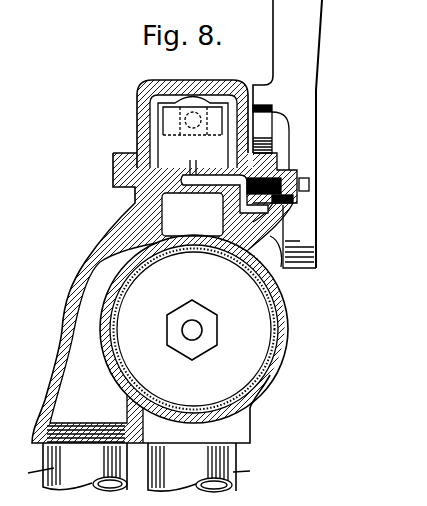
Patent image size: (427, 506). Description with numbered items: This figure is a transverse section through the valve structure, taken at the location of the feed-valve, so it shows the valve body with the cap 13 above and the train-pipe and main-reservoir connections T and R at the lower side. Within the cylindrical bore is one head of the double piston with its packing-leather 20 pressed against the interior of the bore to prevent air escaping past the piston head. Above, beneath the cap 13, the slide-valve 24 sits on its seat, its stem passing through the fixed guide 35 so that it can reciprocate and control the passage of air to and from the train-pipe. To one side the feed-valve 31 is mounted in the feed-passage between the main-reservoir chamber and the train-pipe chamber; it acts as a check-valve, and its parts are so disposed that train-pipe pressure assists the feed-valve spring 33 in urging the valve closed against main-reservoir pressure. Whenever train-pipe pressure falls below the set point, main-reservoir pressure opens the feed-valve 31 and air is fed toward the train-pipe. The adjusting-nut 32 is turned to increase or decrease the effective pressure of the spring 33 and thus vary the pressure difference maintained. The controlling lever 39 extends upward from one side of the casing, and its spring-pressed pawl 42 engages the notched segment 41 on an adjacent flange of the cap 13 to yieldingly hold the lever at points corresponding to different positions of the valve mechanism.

The cap 13 is at (137, 120).
The packing-leather 20 is at (288, 343).
The slide-valve 24 is at (193, 136).
The feed-valve 31 is at (294, 172).
The adjusting-nut 32 is at (310, 183).
The feed-valve spring 33 is at (294, 203).
The fixed guide 35 is at (143, 92).
The controlling lever 39 is at (310, 43).
The notched segment 41 is at (272, 142).
The spring-pressed pawl 42 is at (262, 126).